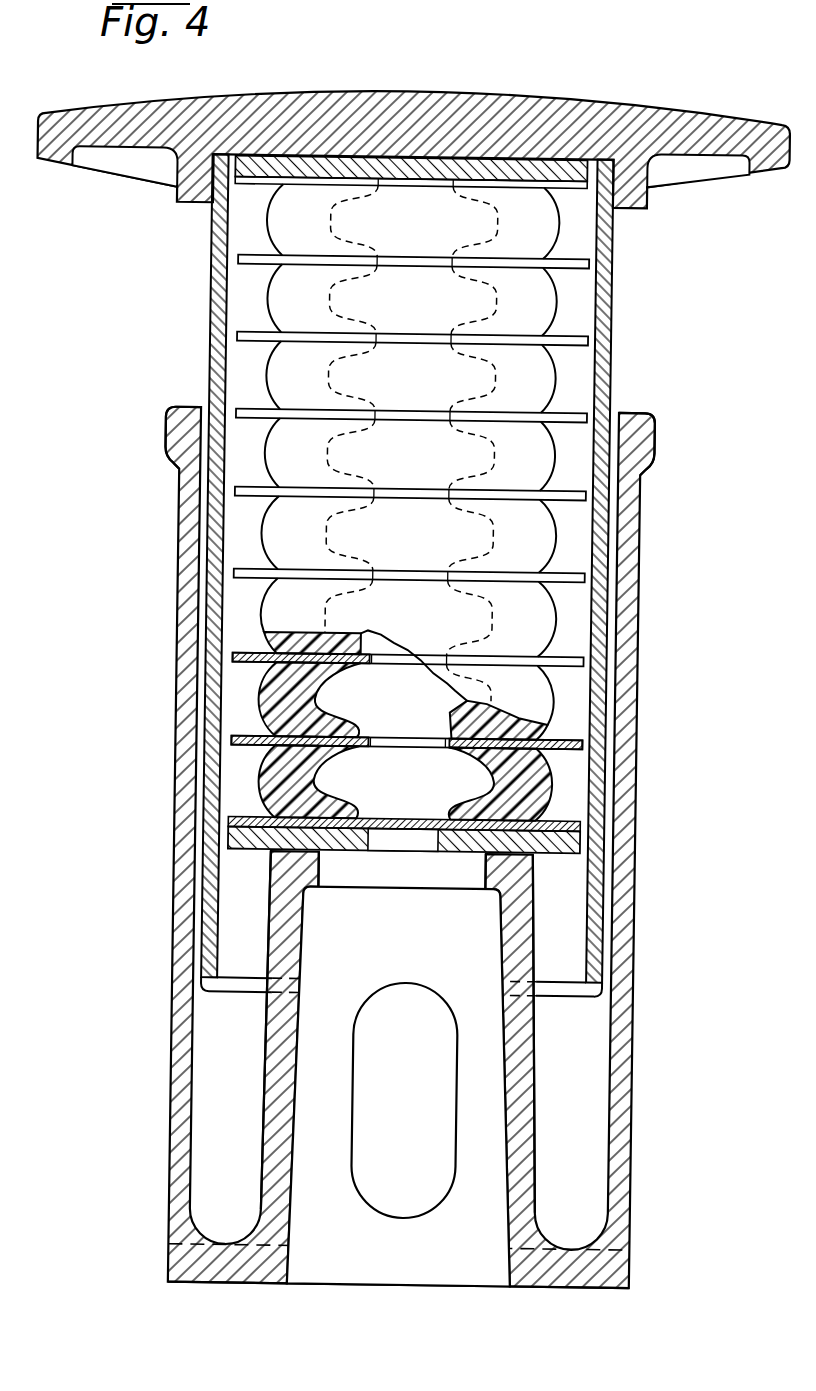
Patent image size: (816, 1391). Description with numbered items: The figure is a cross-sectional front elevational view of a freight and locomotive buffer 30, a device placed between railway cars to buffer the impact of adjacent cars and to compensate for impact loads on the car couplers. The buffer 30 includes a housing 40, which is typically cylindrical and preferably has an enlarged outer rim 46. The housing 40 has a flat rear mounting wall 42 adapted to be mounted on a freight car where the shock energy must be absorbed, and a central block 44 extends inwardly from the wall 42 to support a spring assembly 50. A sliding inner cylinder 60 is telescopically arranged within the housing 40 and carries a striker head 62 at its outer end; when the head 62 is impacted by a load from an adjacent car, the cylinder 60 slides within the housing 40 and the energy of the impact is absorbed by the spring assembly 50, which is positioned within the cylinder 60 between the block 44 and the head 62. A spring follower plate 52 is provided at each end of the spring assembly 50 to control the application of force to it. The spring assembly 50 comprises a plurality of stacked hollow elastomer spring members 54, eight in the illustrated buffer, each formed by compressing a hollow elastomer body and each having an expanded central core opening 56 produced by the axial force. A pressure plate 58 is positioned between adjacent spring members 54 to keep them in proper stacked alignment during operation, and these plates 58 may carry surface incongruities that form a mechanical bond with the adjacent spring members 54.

The freight and locomotive buffer 30 is at (153, 392).
The housing 40 is at (185, 603).
The flat rear mounting wall 42 is at (645, 1287).
The central block 44 is at (535, 1068).
The enlarged outer rim 46 is at (651, 442).
The spring assembly 50 is at (567, 316).
The spring follower plate 52 is at (367, 163).
The hollow elastomer spring member 54 is at (545, 226).
The expanded central core opening 56 is at (416, 258).
The pressure plate 58 is at (244, 256).
The sliding inner cylinder 60 is at (217, 270).
The striker head 62 is at (677, 116).